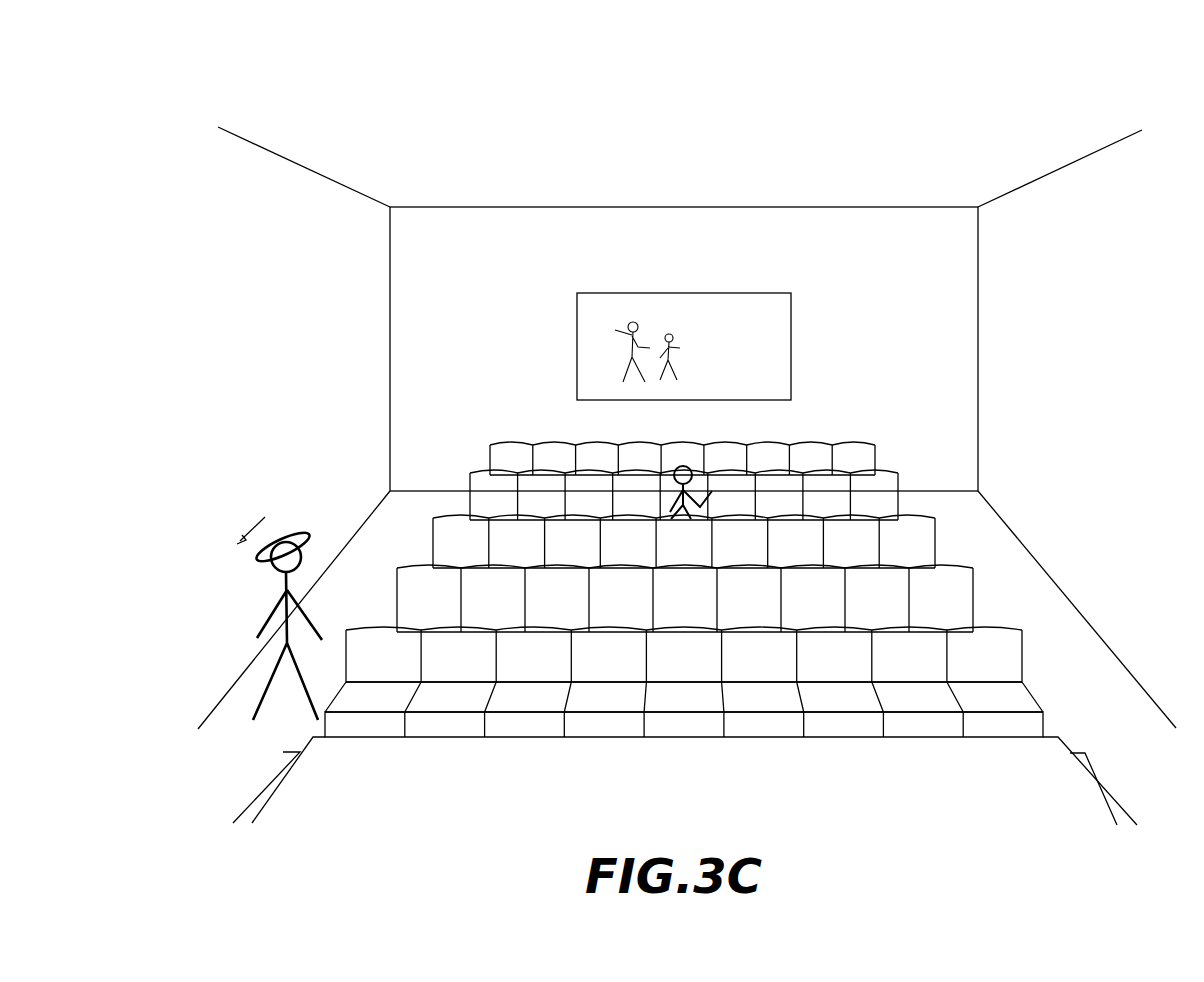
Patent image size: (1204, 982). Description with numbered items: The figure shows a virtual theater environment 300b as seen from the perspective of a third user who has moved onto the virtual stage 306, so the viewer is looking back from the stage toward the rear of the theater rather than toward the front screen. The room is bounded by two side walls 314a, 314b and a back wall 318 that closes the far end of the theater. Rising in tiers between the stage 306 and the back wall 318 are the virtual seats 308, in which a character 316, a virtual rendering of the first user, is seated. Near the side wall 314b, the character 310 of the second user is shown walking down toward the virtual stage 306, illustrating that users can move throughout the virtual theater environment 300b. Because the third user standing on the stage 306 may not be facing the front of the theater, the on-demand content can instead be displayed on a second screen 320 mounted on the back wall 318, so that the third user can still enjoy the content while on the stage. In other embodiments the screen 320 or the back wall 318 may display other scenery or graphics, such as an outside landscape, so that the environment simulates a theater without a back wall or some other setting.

The virtual theater environment 300b is at (1095, 98).
The virtual stage 306 is at (356, 791).
The virtual seats 308 is at (912, 543).
The character 310 is at (276, 594).
The side wall 314a is at (1034, 199).
The side wall 314b is at (310, 195).
The character 316 is at (693, 461).
The back wall 318 is at (706, 222).
The second screen 320 is at (697, 311).